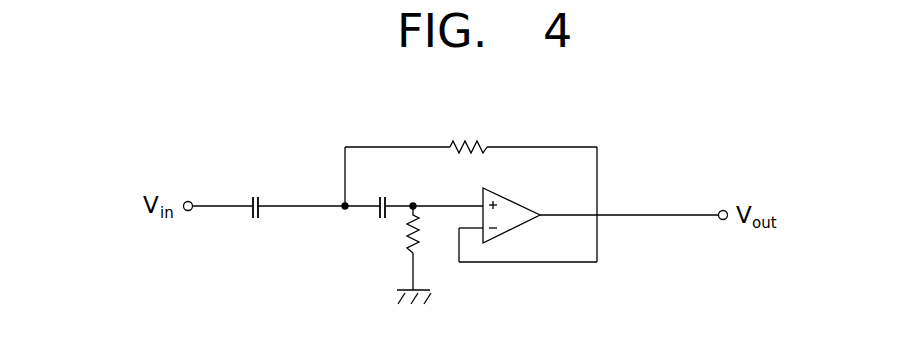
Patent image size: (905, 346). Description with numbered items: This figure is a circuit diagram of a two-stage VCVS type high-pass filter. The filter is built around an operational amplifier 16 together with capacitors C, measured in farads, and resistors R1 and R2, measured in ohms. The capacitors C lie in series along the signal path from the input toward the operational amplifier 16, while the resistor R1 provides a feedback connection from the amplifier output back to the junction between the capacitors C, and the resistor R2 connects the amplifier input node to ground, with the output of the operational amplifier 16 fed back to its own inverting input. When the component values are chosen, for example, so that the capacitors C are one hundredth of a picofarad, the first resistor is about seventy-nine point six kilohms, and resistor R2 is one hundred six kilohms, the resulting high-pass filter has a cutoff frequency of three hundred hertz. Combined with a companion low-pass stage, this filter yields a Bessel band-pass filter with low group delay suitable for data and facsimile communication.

The capacitors C is at (257, 195).
The resistor R1 is at (476, 138).
The resistor R2 is at (408, 243).
The operational amplifier 16 is at (513, 232).